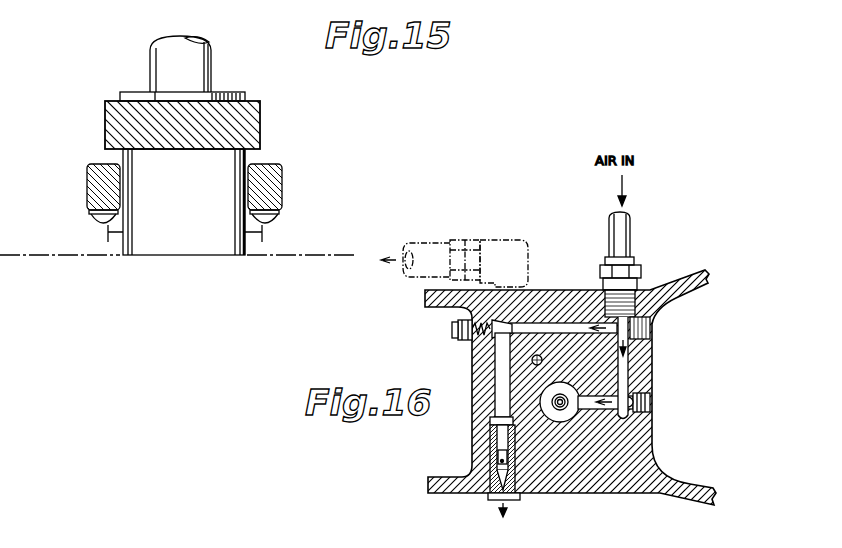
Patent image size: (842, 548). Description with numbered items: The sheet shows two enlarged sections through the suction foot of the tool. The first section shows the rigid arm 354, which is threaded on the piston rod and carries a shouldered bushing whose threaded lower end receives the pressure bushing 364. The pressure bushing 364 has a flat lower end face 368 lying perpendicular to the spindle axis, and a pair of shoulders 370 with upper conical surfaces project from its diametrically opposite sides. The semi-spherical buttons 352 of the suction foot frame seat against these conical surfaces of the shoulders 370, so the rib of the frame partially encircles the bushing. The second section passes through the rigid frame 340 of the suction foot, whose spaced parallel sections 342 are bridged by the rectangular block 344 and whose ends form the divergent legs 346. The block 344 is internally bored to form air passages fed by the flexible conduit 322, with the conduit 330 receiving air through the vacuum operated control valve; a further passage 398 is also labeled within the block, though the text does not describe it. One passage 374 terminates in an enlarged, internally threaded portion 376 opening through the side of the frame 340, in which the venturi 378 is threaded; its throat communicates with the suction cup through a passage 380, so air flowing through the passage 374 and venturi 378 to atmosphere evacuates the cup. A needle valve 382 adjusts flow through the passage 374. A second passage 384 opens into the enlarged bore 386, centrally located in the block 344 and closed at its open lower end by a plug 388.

In FIG. 15, the rigid arm 354 is at (262, 125).
In FIG. 15, the semi-spherical buttons 352 is at (102, 218).
In FIG. 15, the shoulders 370 is at (108, 242).
In FIG. 15, the lower end face 368 is at (150, 256).
In FIG. 15, the pressure bushing 364 is at (232, 252).
In FIG. 16, the conduit 330 is at (426, 240).
In FIG. 16, the flexible conduit 322 is at (633, 243).
In FIG. 16, the rigid frame 340 is at (575, 290).
In FIG. 16, the frame sections 342 is at (436, 308).
In FIG. 16, the needle valve 382 is at (456, 336).
In FIG. 16, the air passage 374 is at (495, 367).
In FIG. 16, the air passage 398 is at (473, 364).
In FIG. 16, the rectangular block 344 is at (652, 366).
In FIG. 16, the divergent legs 346 is at (683, 296).
In FIG. 16, the second passage 384 is at (647, 383).
In FIG. 16, the enlarged internally threaded portion 376 is at (492, 440).
In FIG. 16, the passage 380 is at (496, 470).
In FIG. 16, the venturi 378 is at (515, 498).
In FIG. 16, the enlarged bore 386 is at (572, 421).
In FIG. 16, the plug 388 is at (583, 420).